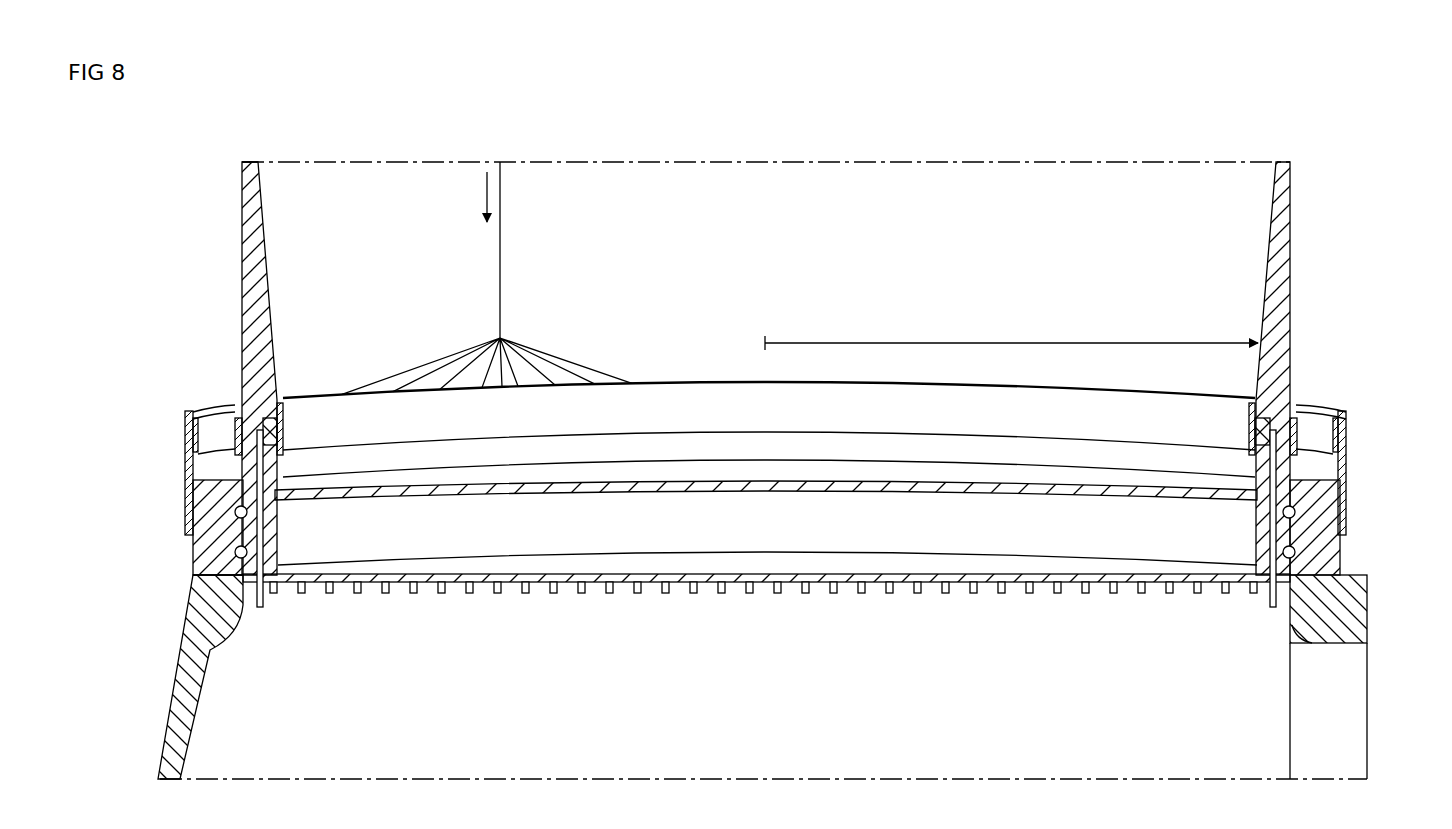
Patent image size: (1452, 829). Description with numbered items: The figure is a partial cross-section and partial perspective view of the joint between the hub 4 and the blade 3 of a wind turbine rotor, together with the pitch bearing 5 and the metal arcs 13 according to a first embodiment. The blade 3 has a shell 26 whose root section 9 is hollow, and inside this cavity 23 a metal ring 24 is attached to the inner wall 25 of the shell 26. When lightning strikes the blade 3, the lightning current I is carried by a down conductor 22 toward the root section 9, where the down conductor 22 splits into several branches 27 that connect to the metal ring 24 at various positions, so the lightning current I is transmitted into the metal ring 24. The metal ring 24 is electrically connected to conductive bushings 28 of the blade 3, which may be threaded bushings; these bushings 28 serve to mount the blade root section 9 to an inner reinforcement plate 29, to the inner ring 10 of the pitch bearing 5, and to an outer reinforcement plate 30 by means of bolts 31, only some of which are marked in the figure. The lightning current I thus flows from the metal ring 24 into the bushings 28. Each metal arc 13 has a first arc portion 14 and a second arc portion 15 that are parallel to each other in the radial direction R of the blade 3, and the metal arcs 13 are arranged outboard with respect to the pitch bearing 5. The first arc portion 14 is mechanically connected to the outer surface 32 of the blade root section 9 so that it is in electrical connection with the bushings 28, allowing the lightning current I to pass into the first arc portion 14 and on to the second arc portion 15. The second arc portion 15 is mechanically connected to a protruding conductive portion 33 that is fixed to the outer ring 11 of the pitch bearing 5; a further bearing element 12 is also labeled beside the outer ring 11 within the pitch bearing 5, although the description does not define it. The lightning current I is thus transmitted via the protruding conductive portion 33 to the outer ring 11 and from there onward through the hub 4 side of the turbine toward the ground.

The blade 3 is at (240, 203).
The hub 4 is at (182, 690).
The pitch bearing 5 is at (710, 554).
The root section 9 is at (240, 348).
The inner ring 10 is at (236, 582).
The outer ring 11 is at (235, 513).
The second seal 12 is at (235, 551).
The metal arcs 13 is at (762, 468).
The first arc portion 14 is at (200, 425).
The second arc portion 15 is at (200, 455).
The down conductor 22 is at (500, 186).
The cavity 23 is at (862, 190).
The metal ring 24 is at (706, 386).
The inner wall 25 is at (780, 240).
The shell 26 is at (248, 162).
The branches 27 is at (368, 372).
The conductive bushings 28 is at (285, 424).
The inner reinforcement plate 29 is at (738, 495).
The outer reinforcement plate 30 is at (666, 585).
The bolts 31 is at (266, 520).
The outer surface 32 is at (240, 268).
The protruding conductive portion 33 is at (190, 487).
The lightning current I is at (486, 186).
The radial direction R is at (990, 340).